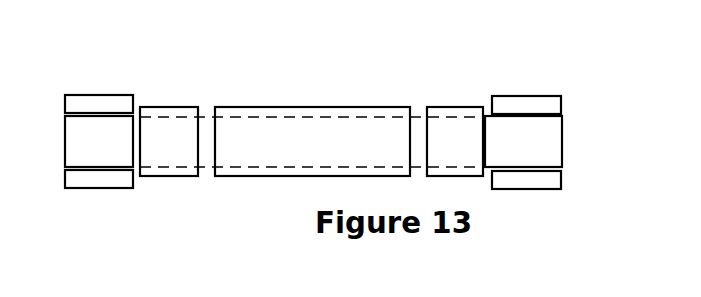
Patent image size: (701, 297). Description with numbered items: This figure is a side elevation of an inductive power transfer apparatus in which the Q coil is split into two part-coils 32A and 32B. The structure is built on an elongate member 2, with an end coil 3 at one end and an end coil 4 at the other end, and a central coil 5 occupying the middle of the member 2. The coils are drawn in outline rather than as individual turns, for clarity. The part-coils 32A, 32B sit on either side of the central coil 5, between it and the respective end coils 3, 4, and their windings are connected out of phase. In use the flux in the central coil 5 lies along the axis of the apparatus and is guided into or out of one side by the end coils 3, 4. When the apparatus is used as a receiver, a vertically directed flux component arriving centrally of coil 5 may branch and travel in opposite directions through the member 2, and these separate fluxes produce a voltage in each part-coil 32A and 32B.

The member 2 is at (553, 137).
The end coil 3 is at (102, 102).
The end coil 4 is at (527, 103).
The central coil 5 is at (313, 107).
The part-coil 32A is at (157, 107).
The part-coil 32B is at (443, 107).